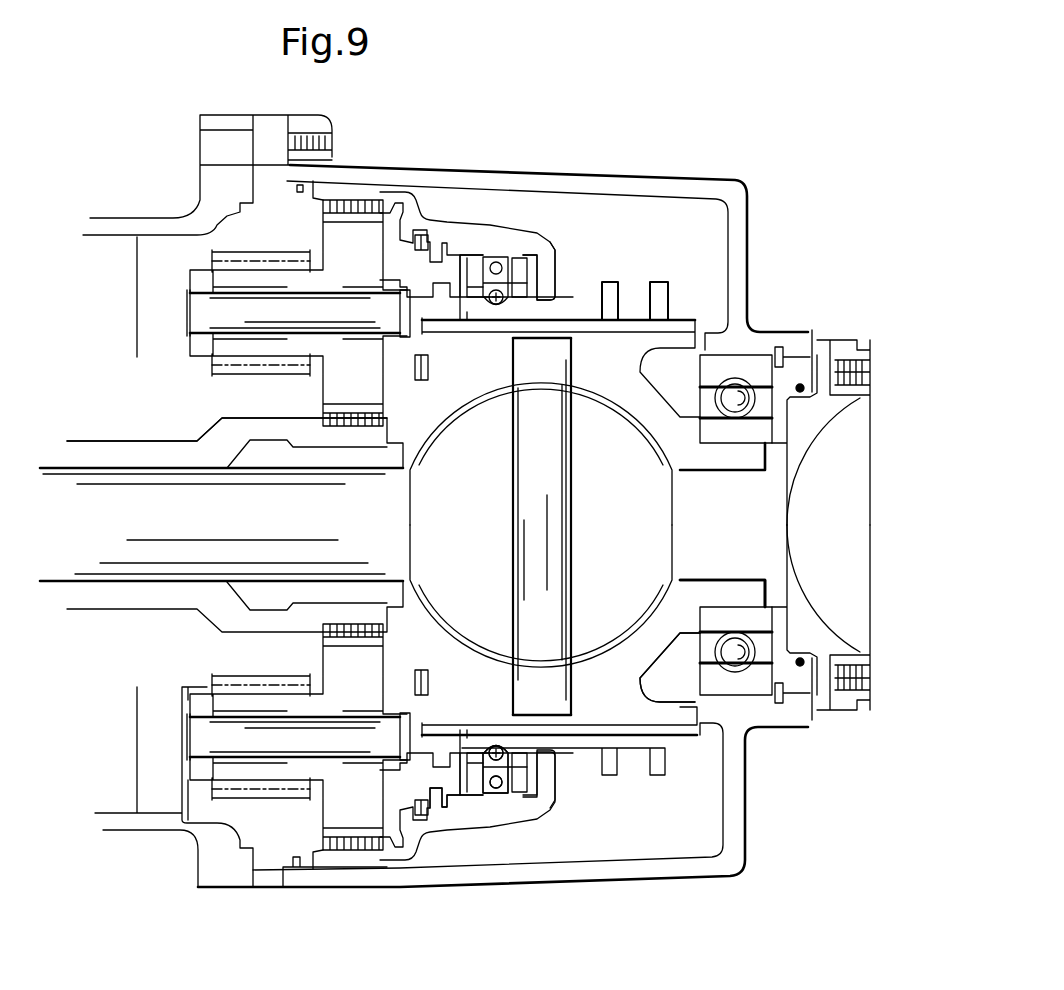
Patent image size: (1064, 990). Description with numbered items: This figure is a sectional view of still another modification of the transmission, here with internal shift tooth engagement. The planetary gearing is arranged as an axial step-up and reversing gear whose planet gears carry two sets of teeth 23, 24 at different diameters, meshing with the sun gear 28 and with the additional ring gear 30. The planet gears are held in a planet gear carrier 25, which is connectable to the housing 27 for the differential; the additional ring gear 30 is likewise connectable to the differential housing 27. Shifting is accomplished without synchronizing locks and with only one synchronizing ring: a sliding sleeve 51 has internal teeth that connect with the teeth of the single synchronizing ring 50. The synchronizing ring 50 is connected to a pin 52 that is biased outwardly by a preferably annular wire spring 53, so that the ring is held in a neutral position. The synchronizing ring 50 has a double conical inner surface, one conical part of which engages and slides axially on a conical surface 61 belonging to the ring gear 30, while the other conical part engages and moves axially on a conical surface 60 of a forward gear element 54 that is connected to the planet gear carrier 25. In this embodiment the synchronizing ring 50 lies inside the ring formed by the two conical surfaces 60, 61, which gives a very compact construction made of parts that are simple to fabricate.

The set of teeth 23 is at (232, 698).
The set of teeth 24 is at (342, 800).
The planet gear carrier 25 is at (203, 303).
The housing 27 is at (688, 717).
The sun gear 28 is at (175, 452).
The additional ring gear 30 is at (410, 208).
The synchronizing ring 50 is at (517, 270).
The sliding sleeve 51 is at (607, 293).
The pin 52 is at (497, 777).
The wire spring 53 is at (500, 257).
The forward gear element 54 is at (452, 795).
The conical surface 60 is at (460, 255).
The conical surface 61 is at (527, 257).